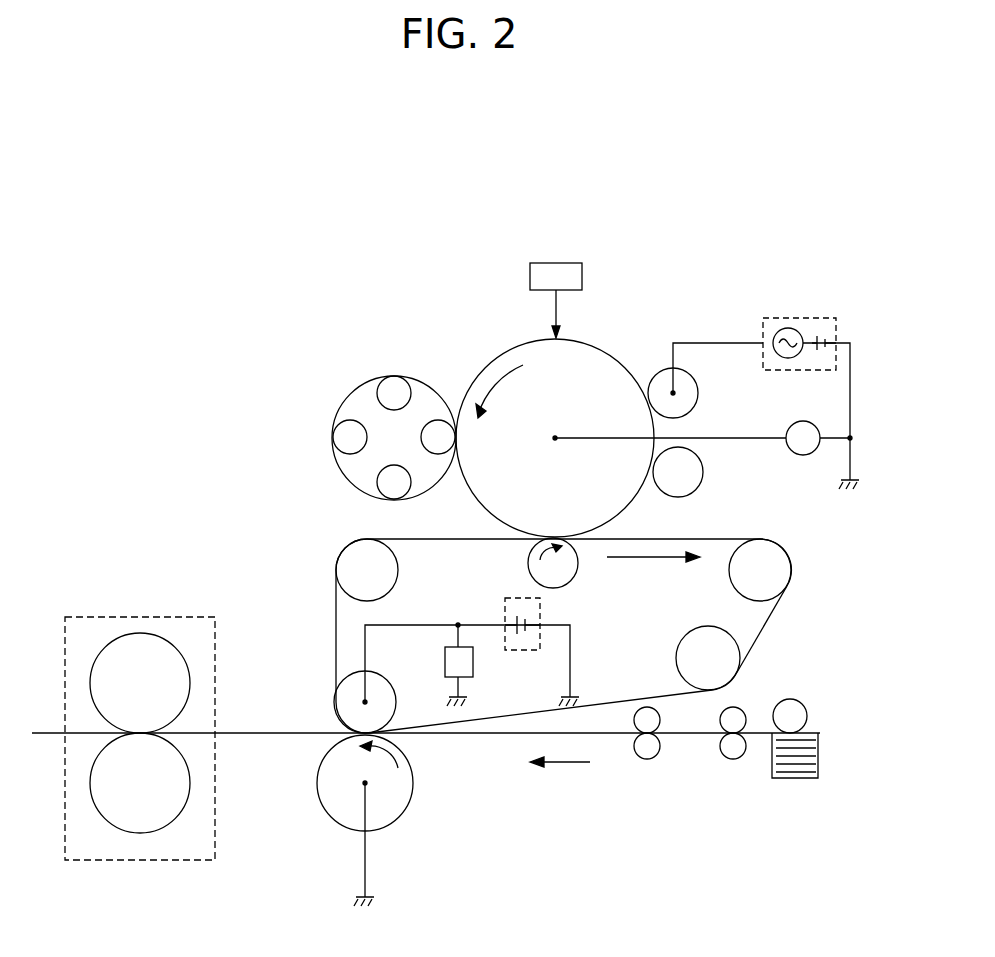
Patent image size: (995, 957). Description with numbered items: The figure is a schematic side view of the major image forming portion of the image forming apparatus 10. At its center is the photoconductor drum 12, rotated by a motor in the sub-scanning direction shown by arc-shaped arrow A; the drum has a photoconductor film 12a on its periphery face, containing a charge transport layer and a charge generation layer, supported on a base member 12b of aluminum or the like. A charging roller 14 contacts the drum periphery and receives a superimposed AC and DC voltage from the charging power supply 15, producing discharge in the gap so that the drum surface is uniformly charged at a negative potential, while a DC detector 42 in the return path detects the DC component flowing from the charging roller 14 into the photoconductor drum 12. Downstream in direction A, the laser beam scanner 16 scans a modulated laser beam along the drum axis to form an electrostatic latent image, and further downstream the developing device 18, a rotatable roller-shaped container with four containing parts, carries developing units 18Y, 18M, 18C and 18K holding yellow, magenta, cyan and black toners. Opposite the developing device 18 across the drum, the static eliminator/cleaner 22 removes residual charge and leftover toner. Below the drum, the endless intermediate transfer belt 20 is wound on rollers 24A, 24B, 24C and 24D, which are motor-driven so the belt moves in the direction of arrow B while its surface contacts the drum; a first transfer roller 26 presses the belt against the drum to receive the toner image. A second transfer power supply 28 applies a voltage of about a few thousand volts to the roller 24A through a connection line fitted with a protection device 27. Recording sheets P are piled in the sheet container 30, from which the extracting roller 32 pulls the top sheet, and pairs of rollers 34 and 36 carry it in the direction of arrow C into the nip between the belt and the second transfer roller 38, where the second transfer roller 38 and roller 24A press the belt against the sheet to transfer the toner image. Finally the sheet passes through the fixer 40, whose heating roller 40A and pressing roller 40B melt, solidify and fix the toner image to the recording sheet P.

The image forming apparatus 10 is at (432, 223).
The photoconductor drum 12 is at (592, 347).
The photoconductor film 12a is at (626, 361).
The base member 12b is at (530, 358).
The charging roller 14 is at (696, 379).
The charging power supply 15 is at (784, 318).
The laser beam scanner 16 is at (549, 262).
The developing device 18 is at (361, 388).
The developing unit 18C is at (393, 377).
The developing unit 18K is at (437, 420).
The developing unit 18M is at (333, 437).
The developing unit 18Y is at (386, 500).
The intermediate transfer belt 20 is at (770, 632).
The static eliminator/cleaner 22 is at (703, 472).
The roller 24A is at (385, 676).
The roller 24B is at (399, 570).
The roller 24C is at (730, 578).
The roller 24D is at (679, 645).
The first transfer roller 26 is at (575, 576).
The protection device 27 is at (475, 662).
The second transfer power supply 28 is at (505, 600).
The sheet container 30 is at (772, 765).
The extracting roller 32 is at (797, 703).
The pair of rollers 34 is at (740, 710).
The pair of rollers 36 is at (659, 718).
The second transfer roller 38 is at (413, 780).
The fixer 40 is at (222, 655).
The heating roller 40A is at (140, 633).
The roller 40B is at (140, 833).
The DC detector 42 is at (801, 455).
The arc-shaped arrow A is at (500, 383).
The arrow B is at (633, 561).
The arrow C is at (572, 765).
The recording sheet P is at (684, 736).